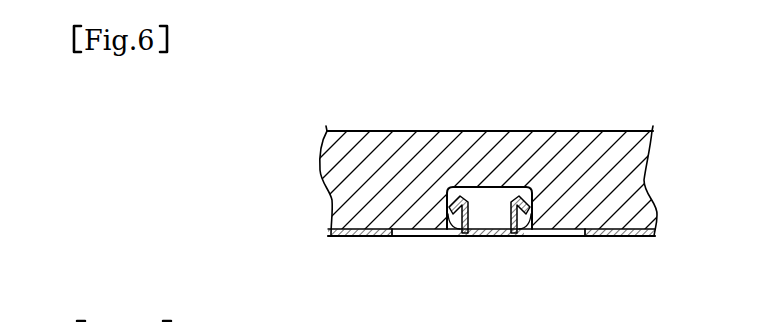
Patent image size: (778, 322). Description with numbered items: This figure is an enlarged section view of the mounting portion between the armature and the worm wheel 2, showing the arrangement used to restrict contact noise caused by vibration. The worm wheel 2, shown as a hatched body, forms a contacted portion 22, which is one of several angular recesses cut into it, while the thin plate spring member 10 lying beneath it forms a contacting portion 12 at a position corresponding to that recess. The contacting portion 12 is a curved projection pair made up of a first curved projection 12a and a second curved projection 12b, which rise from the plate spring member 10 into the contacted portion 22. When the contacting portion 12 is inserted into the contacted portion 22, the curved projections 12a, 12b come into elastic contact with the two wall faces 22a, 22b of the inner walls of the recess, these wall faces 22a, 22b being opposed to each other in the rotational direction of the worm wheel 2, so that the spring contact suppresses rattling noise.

The worm wheel 2 is at (378, 132).
The plate spring member 10 is at (611, 237).
The contacting portion 12 is at (490, 146).
The curved projection 12a is at (470, 188).
The curved projection 12b is at (518, 188).
The contacted portion 22 is at (487, 210).
The wall face 22a is at (456, 237).
The wall face 22b is at (523, 237).